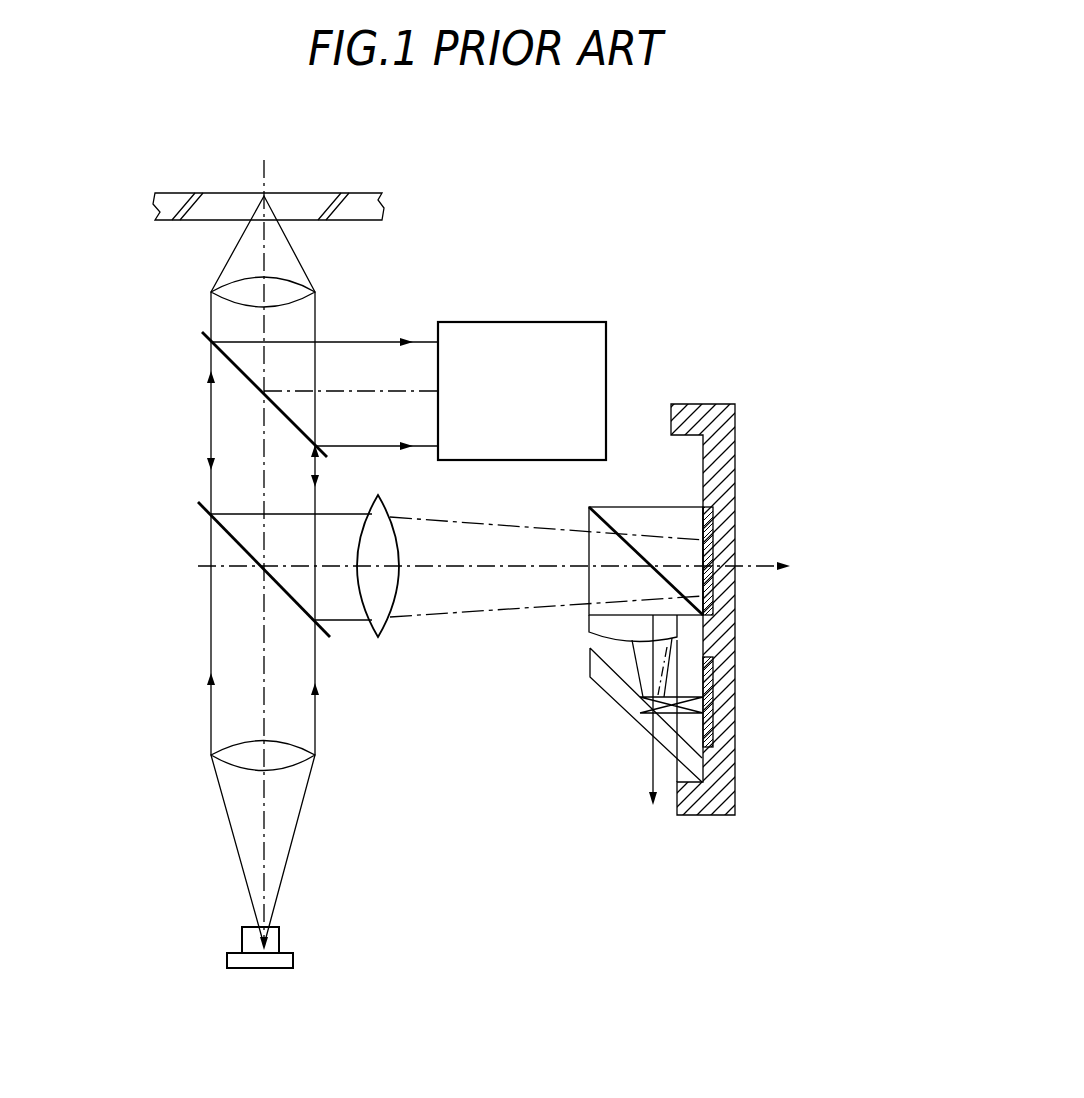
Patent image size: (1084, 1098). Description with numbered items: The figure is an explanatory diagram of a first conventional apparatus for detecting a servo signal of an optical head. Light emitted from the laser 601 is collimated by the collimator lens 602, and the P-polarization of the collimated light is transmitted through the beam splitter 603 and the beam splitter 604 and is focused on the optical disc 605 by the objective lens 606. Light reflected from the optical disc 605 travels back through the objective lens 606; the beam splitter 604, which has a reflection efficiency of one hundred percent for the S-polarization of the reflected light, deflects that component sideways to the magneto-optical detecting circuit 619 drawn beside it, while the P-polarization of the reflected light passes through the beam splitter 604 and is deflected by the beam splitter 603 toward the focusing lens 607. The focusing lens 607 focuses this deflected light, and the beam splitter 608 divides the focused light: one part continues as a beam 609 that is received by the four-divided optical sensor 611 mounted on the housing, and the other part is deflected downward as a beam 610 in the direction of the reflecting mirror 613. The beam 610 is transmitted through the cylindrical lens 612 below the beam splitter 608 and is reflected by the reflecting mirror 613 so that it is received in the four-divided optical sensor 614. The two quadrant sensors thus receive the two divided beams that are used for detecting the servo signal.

The laser 601 is at (282, 940).
The collimator lens 602 is at (297, 758).
The beam splitter 603 is at (245, 548).
The beam splitter 604 is at (252, 385).
The optical disc 605 is at (353, 212).
The objective lens 606 is at (293, 297).
The focusing lens 607 is at (383, 630).
The beam splitter 608 is at (713, 437).
The beam 609 is at (530, 577).
The beam 610 is at (665, 739).
The four-divided optical sensor 611 is at (685, 525).
The cylindrical lens 612 is at (708, 623).
The reflecting mirror 613 is at (617, 683).
The four-divided optical sensor 614 is at (710, 728).
The magneto-optical detecting circuit 619 is at (558, 332).